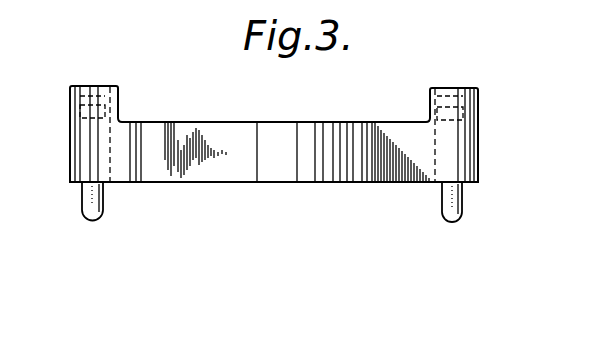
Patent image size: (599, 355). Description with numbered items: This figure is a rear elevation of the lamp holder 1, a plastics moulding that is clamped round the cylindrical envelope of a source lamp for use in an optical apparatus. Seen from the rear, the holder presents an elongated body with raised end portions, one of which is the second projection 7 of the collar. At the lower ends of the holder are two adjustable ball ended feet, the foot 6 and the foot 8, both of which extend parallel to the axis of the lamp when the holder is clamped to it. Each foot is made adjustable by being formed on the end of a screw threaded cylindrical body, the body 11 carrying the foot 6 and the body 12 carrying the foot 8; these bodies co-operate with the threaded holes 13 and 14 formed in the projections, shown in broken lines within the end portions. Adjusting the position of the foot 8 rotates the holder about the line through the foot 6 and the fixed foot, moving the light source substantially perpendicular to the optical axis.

The lamp holder 1 is at (312, 200).
The adjustable ball ended foot 6 is at (463, 214).
The second projection 7 is at (122, 162).
The second adjustable ball ended foot 8 is at (102, 200).
The screw threaded cylindrical body 11 is at (455, 143).
The screw threaded cylindrical body 12 is at (90, 156).
The threaded hole 13 is at (438, 98).
The threaded hole 14 is at (106, 92).